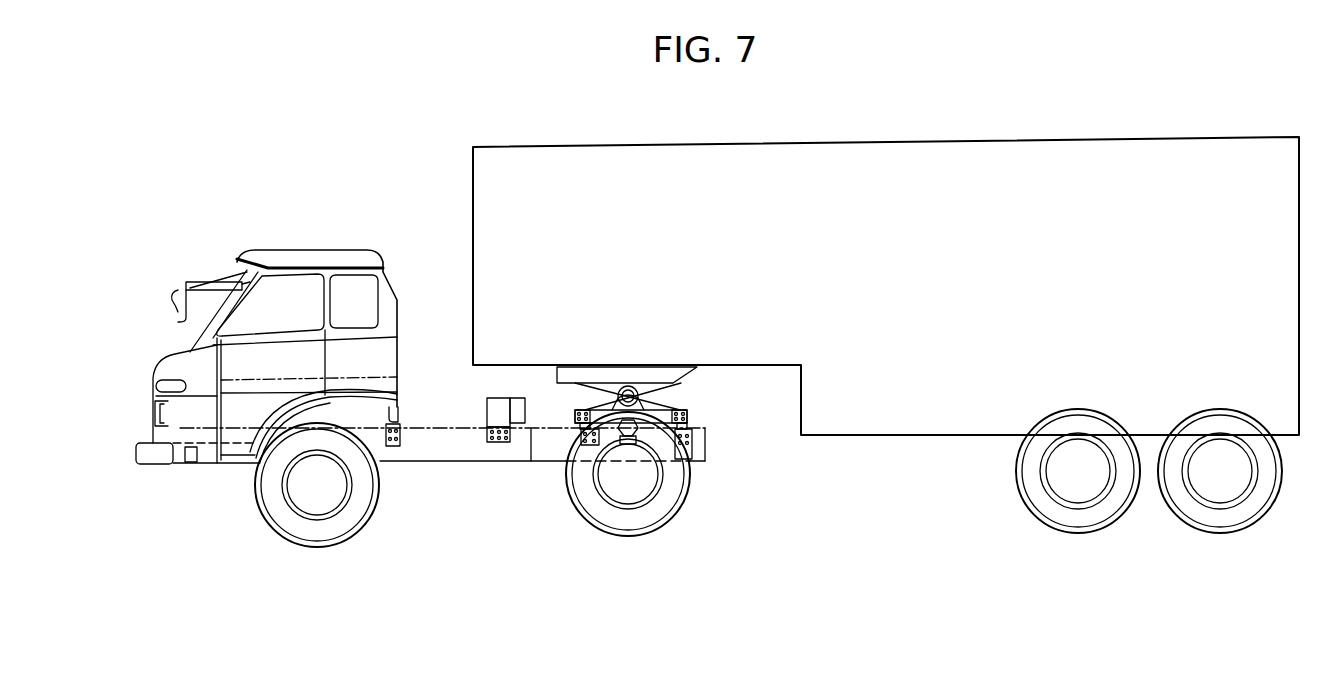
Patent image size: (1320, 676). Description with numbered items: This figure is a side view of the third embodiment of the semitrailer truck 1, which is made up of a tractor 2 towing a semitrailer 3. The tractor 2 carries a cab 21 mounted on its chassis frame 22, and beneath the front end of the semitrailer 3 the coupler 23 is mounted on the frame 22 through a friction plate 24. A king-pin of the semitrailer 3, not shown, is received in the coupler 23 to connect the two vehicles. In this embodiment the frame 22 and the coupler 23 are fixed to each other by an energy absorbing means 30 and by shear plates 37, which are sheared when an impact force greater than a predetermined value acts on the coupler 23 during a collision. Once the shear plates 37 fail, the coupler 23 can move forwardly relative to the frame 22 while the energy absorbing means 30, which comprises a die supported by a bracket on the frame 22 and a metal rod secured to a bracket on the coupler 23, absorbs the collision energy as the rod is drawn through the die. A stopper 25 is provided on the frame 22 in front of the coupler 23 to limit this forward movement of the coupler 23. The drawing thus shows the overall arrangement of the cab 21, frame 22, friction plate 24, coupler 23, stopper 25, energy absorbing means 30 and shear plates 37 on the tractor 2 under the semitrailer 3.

The semitrailer truck 1 is at (554, 98).
The tractor 2 is at (327, 246).
The semitrailer 3 is at (842, 142).
The cab 21 is at (262, 250).
The chassis frame 22 is at (462, 463).
The coupler 23 is at (680, 391).
The friction plate 24 is at (530, 463).
The stopper 25 is at (487, 402).
The energy absorbing means 30 is at (572, 432).
The shear plates 37 is at (646, 436).